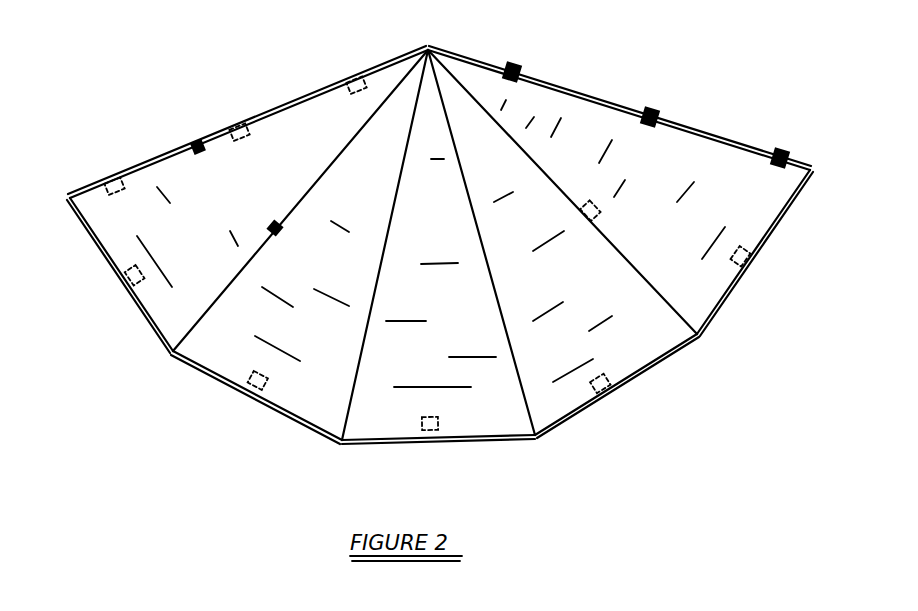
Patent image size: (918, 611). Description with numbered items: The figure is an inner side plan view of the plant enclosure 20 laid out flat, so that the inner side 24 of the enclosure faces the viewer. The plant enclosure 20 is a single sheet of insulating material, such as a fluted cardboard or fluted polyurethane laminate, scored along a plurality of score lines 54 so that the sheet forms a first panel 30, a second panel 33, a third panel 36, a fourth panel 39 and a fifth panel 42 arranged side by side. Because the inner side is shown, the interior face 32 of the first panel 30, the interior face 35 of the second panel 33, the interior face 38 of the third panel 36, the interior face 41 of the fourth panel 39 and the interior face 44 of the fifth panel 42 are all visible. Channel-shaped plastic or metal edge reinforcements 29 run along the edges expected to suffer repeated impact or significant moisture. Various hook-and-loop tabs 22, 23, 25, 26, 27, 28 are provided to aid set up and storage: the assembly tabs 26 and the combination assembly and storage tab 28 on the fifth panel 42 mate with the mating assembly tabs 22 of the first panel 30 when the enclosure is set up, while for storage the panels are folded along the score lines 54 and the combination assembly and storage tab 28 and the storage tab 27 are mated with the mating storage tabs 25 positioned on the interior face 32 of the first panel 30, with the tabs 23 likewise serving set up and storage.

The plant enclosure 20 is at (604, 42).
The mating assembly tab 22 is at (355, 82).
The tab 23 is at (752, 258).
The inner side 24 is at (295, 135).
The mating storage tab 25 is at (200, 152).
The assembly tab 26 is at (510, 66).
The storage tab 27 is at (598, 205).
The combination assembly and storage tab 28 is at (658, 115).
The edge reinforcement 29 is at (385, 50).
The first panel 30 is at (162, 322).
The interior face of the first panel 32 is at (200, 254).
The second panel 33 is at (320, 405).
The interior face of the second panel 35 is at (330, 327).
The third panel 36 is at (505, 422).
The interior face of the third panel 38 is at (468, 322).
The fourth panel 39 is at (680, 345).
The interior face of the fourth panel 41 is at (576, 277).
The fifth panel 42 is at (790, 208).
The interior face of the fifth panel 44 is at (715, 174).
The score line 54 is at (395, 172).